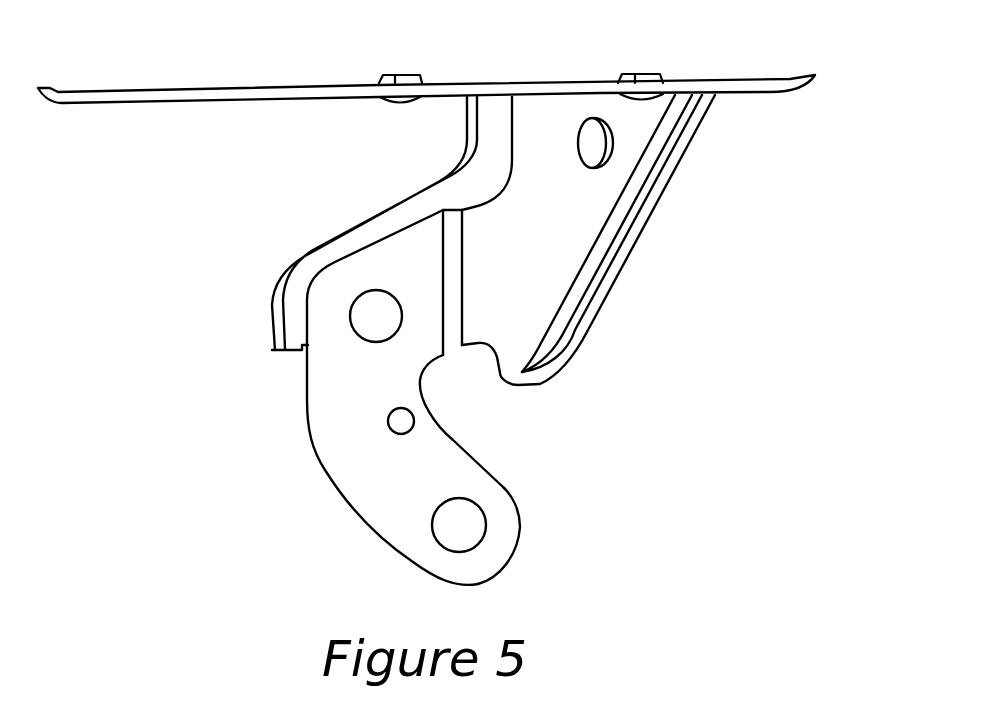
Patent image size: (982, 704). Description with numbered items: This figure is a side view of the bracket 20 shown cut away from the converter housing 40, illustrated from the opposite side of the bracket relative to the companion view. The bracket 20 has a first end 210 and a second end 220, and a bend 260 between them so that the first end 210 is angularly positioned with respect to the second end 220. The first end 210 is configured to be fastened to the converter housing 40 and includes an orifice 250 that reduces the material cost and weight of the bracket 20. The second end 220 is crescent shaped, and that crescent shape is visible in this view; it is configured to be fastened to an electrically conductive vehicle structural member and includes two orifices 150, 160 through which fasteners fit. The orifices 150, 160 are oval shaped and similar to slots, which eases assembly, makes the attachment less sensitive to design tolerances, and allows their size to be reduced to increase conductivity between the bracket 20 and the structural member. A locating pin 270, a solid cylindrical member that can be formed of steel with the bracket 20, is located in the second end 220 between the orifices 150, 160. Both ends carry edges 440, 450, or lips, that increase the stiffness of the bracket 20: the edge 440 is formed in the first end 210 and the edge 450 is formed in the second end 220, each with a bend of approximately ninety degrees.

The converter housing 40 is at (140, 90).
The bracket 20 is at (720, 273).
The first end 210 is at (557, 110).
The edge 440 is at (355, 230).
The edge 450 is at (597, 273).
The bend 260 is at (453, 288).
The orifice 250 is at (603, 147).
The orifice 150 is at (366, 314).
The locating pin 270 is at (400, 421).
The second end 220 is at (447, 462).
The orifice 160 is at (458, 525).